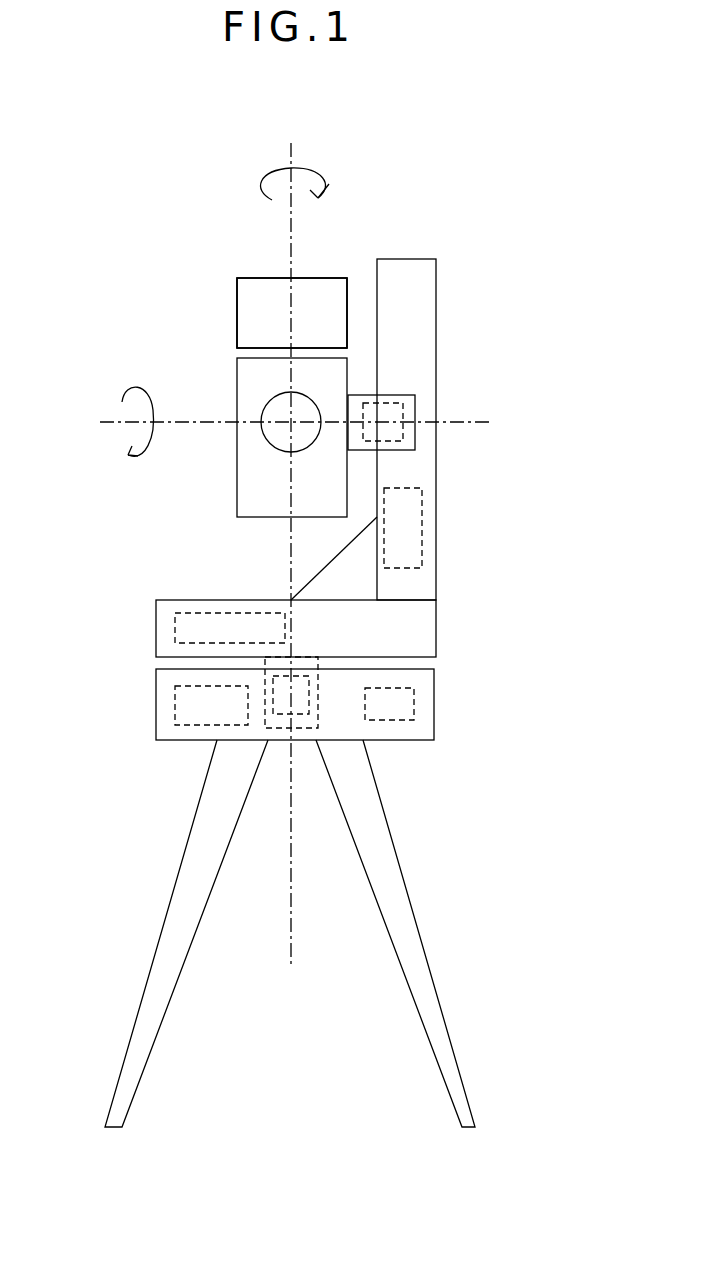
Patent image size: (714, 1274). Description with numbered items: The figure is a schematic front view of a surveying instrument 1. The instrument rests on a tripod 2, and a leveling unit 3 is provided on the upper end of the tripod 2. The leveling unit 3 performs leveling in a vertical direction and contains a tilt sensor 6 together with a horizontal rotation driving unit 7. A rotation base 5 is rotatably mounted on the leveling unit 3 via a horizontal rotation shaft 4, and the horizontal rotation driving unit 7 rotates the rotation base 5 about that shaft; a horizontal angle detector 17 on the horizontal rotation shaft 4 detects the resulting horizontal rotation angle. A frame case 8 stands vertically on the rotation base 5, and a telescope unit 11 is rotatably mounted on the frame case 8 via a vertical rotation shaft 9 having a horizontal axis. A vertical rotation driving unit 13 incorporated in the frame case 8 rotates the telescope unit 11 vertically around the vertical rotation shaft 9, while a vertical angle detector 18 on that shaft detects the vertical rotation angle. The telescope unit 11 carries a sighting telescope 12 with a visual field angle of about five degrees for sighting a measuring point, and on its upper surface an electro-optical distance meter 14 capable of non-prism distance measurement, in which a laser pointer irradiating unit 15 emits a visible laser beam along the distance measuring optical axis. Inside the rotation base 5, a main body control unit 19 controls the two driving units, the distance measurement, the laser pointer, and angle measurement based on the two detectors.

The surveying instrument 1 is at (123, 281).
The tripod 2 is at (403, 873).
The leveling unit 3 is at (434, 726).
The horizontal rotation shaft 4 is at (318, 713).
The rotation base 5 is at (436, 635).
The tilt sensor 6 is at (414, 705).
The horizontal rotation driving unit 7 is at (175, 705).
The frame case 8 is at (436, 296).
The vertical rotation shaft 9 is at (358, 393).
The telescope unit 11 is at (237, 470).
The sighting telescope 12 is at (263, 403).
The vertical rotation driving unit 13 is at (422, 522).
The electro-optical distance meter 14 is at (253, 278).
The laser pointer irradiating unit 15 is at (292, 313).
The horizontal angle detector 17 is at (278, 713).
The vertical angle detector 18 is at (403, 413).
The main body control unit 19 is at (175, 628).